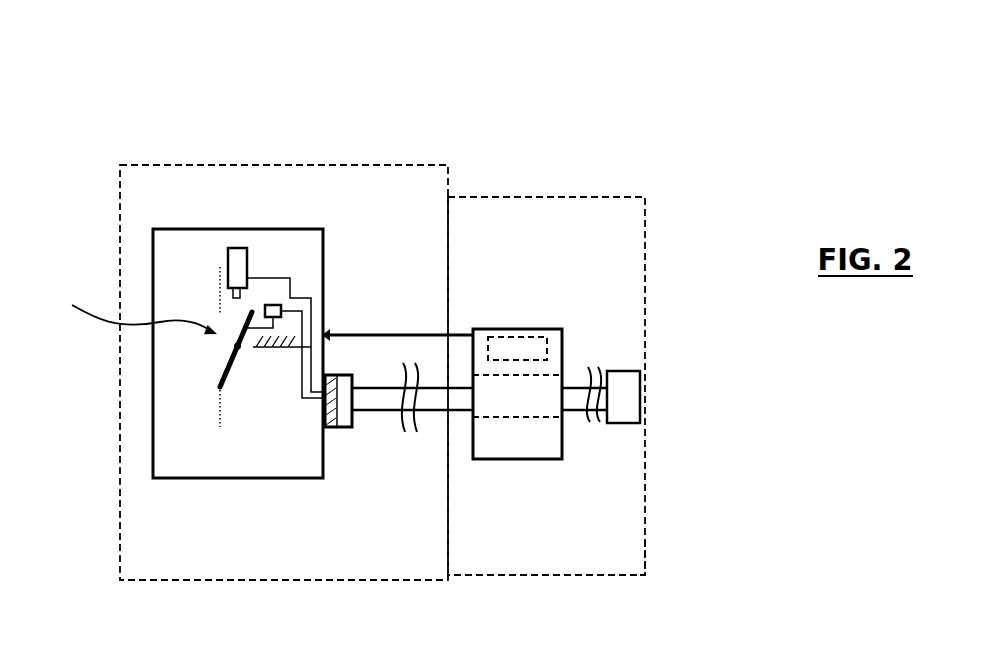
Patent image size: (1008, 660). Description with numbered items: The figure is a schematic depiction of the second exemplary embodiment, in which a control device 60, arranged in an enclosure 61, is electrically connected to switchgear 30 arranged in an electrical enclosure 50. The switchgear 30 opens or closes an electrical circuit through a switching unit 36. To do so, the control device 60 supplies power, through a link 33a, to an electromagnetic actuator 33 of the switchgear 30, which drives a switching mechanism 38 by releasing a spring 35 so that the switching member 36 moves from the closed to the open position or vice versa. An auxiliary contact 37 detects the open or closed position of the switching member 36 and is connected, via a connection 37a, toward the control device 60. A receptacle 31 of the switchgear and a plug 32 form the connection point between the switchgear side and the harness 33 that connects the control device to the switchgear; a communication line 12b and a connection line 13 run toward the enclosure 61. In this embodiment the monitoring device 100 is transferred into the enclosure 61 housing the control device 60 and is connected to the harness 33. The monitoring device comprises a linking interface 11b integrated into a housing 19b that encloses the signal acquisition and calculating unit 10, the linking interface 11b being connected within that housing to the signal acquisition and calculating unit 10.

The monitoring device 100 is at (502, 278).
The signal acquisition and calculating unit 10 is at (550, 350).
The linking interface 11b is at (530, 418).
The communication line 12b is at (330, 335).
The connection line 13 is at (403, 335).
The housing 19b is at (537, 459).
The switchgear 30 is at (173, 267).
The receptacle 31 is at (330, 428).
The plug 32 is at (348, 428).
The electromagnetic actuator 33 is at (237, 248).
The link 33a is at (311, 298).
The spring 35 is at (250, 350).
The switching unit 36 is at (223, 368).
The auxiliary contact 37 is at (273, 305).
The switch wiring 37a is at (305, 398).
The switching mechanism 38 is at (126, 310).
The electrical enclosure 50 is at (157, 165).
The control device 60 is at (642, 390).
The enclosure 61 is at (645, 548).